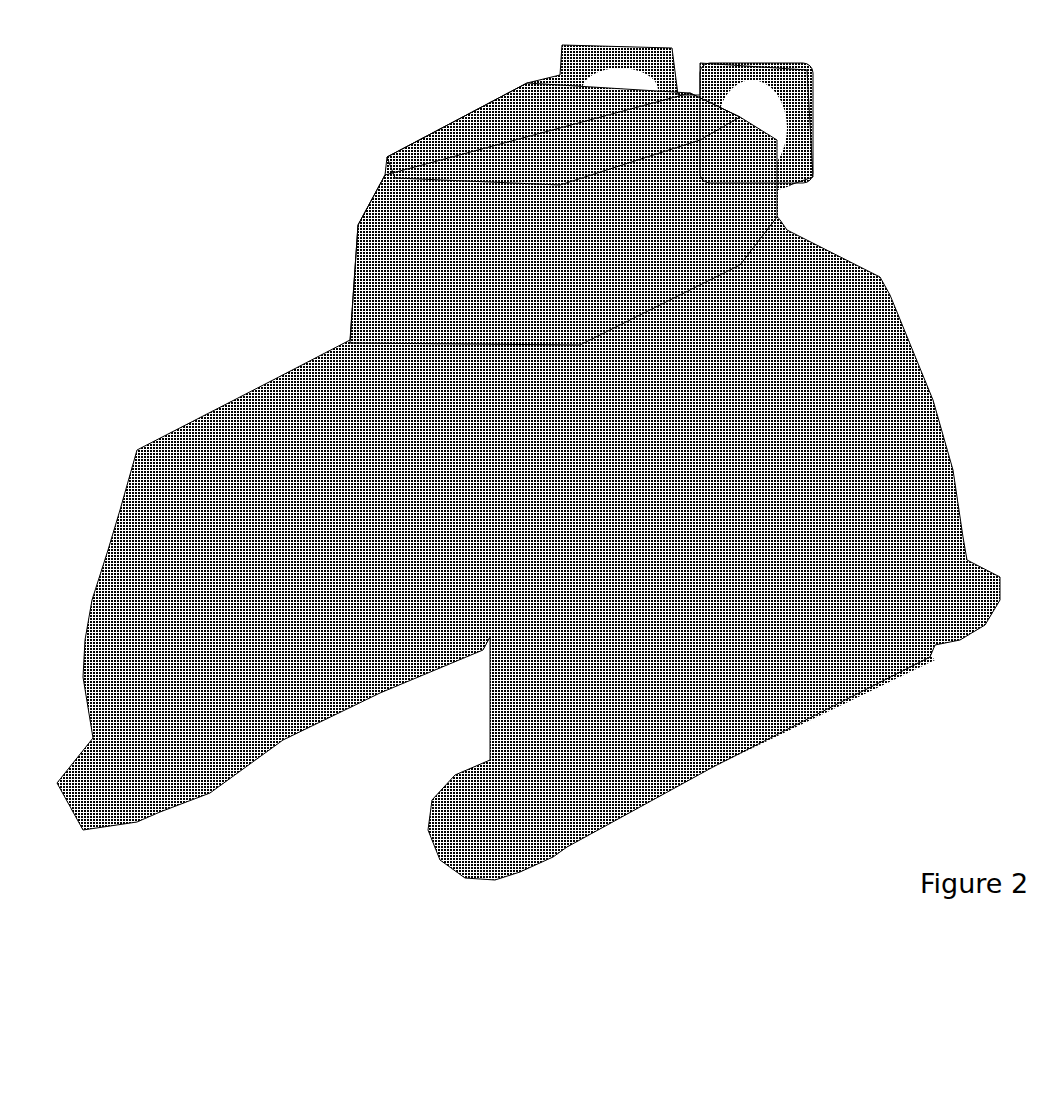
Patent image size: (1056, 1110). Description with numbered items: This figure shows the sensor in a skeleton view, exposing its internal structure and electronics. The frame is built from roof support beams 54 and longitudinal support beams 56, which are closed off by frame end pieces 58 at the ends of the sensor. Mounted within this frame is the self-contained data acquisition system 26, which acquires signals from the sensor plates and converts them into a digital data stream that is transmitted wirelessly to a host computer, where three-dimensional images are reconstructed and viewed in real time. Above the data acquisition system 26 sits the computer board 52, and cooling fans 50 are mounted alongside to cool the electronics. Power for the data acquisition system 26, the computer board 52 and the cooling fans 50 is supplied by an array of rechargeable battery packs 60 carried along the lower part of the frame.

The data acquisition system 26 is at (417, 220).
The cooling fans 50 is at (807, 93).
The computer board 52 is at (483, 120).
The roof support beams 54 is at (715, 305).
The longitudinal support beams 56 is at (867, 340).
The frame end pieces 58 is at (930, 375).
The battery packs 60 is at (833, 687).